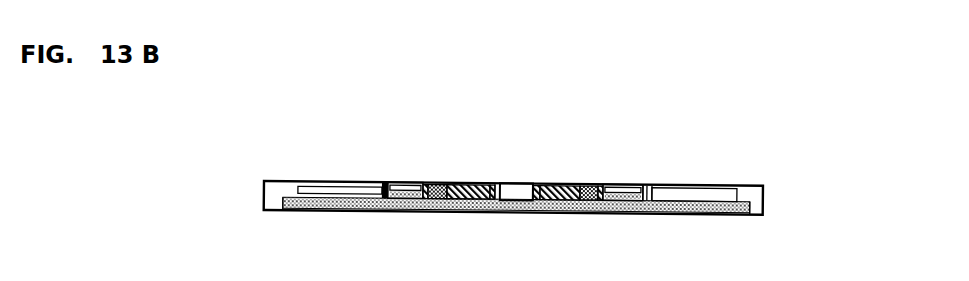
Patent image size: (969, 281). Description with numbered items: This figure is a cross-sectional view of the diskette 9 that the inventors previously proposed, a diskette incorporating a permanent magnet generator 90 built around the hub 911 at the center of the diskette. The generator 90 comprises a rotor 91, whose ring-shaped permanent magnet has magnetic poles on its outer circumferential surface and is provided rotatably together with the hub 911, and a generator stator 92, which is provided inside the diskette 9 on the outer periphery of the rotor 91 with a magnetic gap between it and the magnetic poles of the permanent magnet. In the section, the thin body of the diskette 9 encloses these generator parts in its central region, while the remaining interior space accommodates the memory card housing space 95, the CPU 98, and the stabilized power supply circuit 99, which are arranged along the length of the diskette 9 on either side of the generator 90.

The diskette 9 is at (551, 193).
The permanent magnet generator 90 is at (625, 183).
The rotor 91 is at (588, 182).
The hub 911 is at (545, 182).
The generator stator 92 is at (402, 182).
The memory card housing space 95 is at (710, 212).
The CPU 98 is at (695, 195).
The stabilized power supply circuit 99 is at (328, 188).